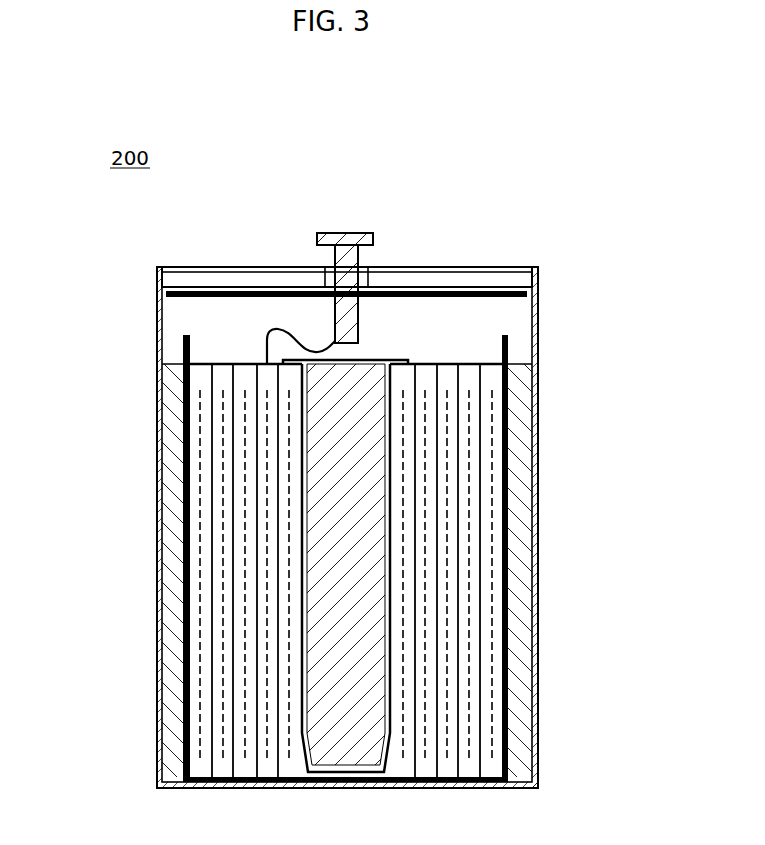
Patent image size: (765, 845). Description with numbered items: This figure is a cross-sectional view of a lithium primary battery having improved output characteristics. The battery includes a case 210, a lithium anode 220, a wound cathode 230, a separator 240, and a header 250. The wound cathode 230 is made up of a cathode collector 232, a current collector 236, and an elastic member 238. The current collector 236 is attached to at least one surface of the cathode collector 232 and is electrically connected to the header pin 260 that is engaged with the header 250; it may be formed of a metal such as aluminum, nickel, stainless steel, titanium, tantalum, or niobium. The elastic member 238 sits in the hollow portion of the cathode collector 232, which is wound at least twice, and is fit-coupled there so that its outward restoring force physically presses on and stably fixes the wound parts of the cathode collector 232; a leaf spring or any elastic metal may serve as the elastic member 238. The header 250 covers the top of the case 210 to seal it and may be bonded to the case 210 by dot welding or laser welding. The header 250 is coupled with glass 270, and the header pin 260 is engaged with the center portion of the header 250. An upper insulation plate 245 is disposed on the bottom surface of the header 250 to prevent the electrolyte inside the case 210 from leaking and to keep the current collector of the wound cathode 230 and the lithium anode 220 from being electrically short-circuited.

The case 210 is at (535, 311).
The lithium anode 220 is at (185, 512).
The wound cathode 230 is at (430, 553).
The cathode collector 232 is at (483, 478).
The current collector 236 is at (313, 352).
The elastic member 238 is at (395, 540).
The separator 240 is at (186, 350).
The upper insulation plate 245 is at (195, 298).
The header 250 is at (461, 277).
The header pin 260 is at (350, 233).
The glass 270 is at (368, 278).